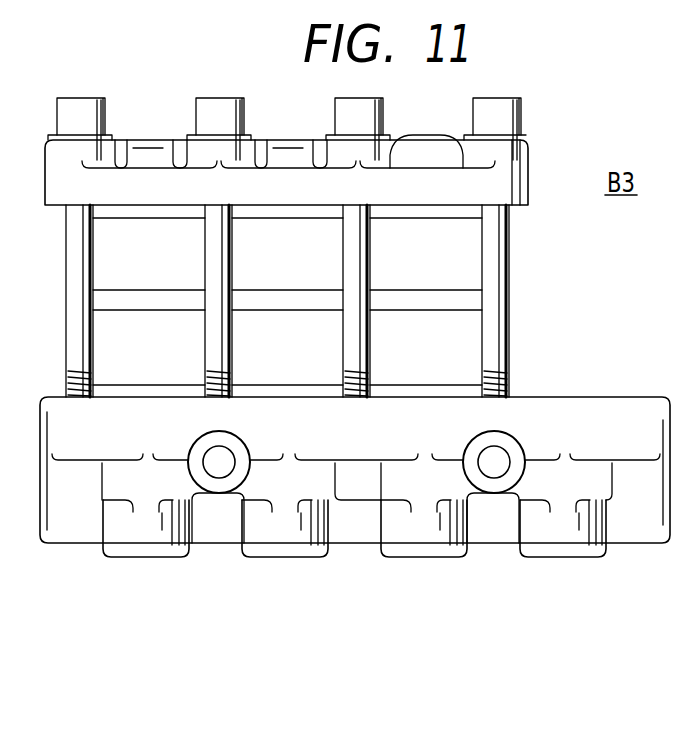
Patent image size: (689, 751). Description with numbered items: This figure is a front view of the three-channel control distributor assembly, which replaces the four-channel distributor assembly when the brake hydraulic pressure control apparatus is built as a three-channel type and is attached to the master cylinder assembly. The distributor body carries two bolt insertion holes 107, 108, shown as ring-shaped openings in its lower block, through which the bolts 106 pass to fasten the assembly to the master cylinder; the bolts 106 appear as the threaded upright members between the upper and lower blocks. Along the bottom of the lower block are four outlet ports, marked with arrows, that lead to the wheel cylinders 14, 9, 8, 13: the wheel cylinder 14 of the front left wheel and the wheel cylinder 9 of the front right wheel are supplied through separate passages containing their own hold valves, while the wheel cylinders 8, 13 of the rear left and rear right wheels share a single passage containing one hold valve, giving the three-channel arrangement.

The bolts 106 is at (72, 270).
The bolt insertion hole 107 is at (504, 457).
The bolt insertion hole 108 is at (211, 457).
The wheel cylinder 14 is at (149, 565).
The wheel cylinder 9 is at (287, 565).
The wheel cylinder 8 is at (427, 565).
The wheel cylinder 13 is at (565, 565).